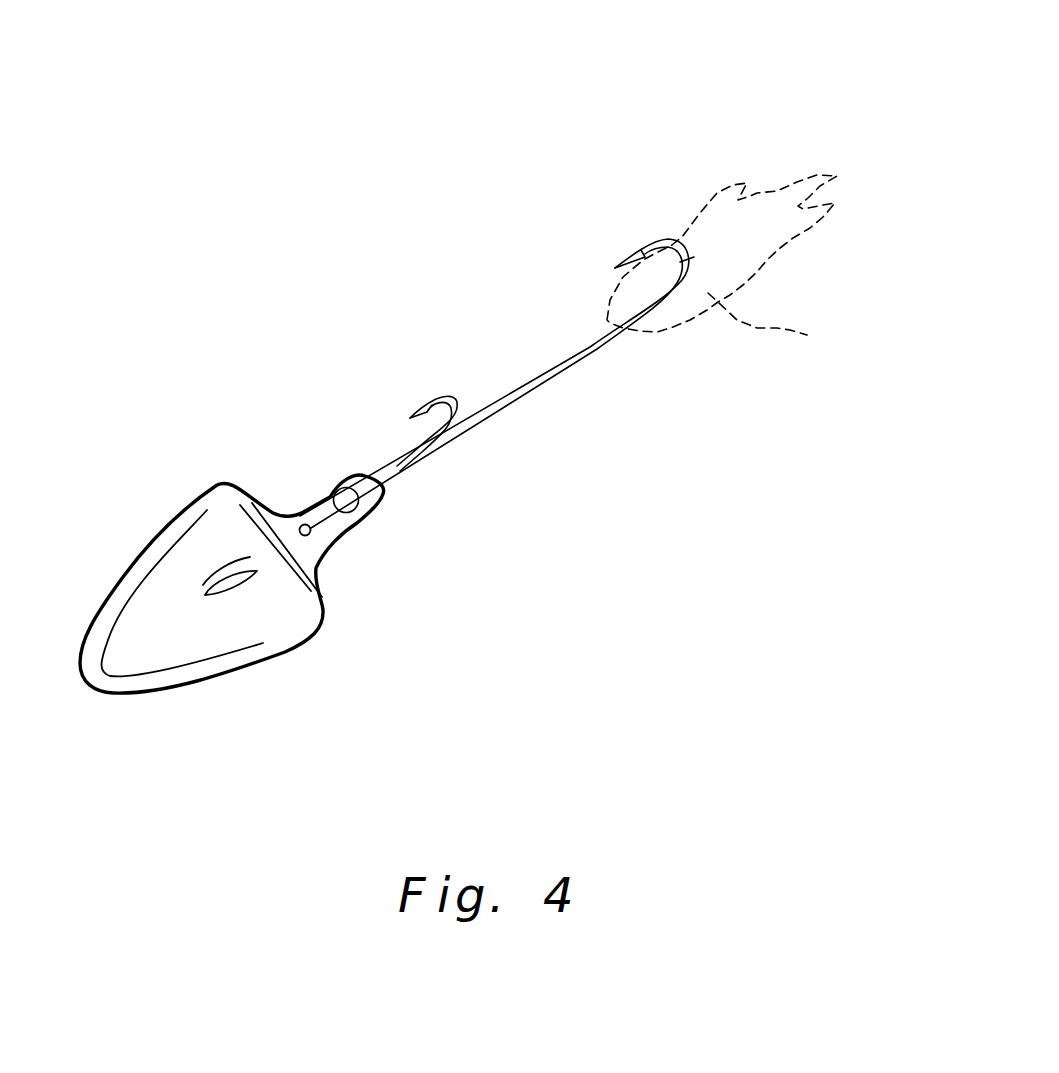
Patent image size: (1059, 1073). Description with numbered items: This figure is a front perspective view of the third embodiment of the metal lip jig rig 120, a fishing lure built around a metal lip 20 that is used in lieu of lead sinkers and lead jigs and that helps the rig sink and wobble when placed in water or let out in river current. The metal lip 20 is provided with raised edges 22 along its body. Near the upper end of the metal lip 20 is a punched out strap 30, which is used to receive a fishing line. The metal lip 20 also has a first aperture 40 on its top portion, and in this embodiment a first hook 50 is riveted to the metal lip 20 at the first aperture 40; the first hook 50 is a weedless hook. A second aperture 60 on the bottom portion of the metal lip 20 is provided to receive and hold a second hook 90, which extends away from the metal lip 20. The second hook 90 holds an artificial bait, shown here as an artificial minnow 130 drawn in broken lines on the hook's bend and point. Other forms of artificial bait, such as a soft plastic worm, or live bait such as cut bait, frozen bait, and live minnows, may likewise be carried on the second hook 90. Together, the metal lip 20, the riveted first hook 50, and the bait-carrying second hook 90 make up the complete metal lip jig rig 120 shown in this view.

The metal lip 20 is at (191, 640).
The raised edges 22 is at (158, 682).
The punched out strap 30 is at (213, 572).
The first aperture 40 is at (304, 523).
The first hook 50 is at (458, 398).
The second aperture 60 is at (358, 513).
The second hook 90 is at (525, 393).
The metal lip jig rig 120 is at (705, 158).
The artificial minnow 130 is at (800, 333).